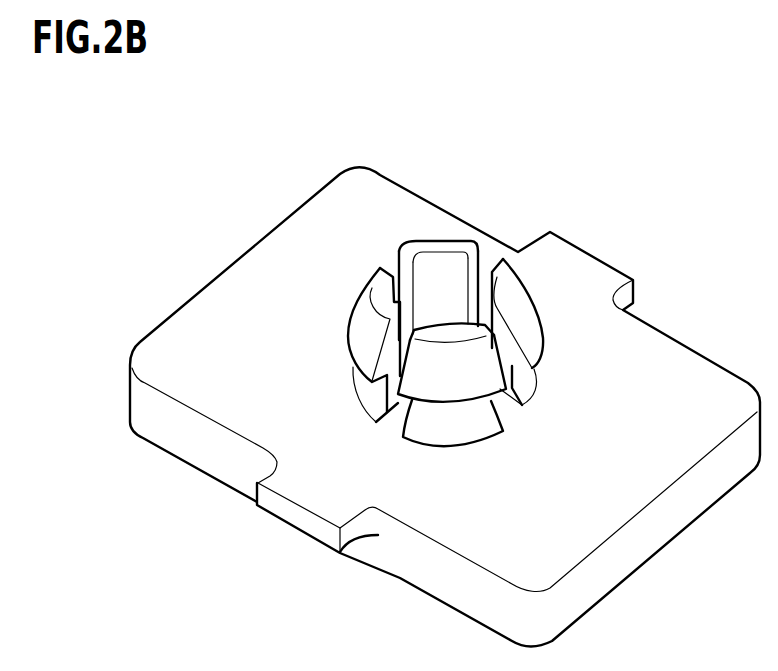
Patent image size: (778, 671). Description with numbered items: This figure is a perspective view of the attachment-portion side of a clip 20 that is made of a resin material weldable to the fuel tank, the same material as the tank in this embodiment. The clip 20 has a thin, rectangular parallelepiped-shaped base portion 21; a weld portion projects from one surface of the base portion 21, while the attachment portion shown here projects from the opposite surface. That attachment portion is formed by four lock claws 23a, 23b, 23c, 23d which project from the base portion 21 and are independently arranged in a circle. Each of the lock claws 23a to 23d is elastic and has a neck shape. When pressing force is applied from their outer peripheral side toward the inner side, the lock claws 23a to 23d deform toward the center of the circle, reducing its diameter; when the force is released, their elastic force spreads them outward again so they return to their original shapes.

The clip 20 is at (571, 194).
The base portion 21 is at (398, 182).
The lock claw 23a is at (437, 238).
The lock claw 23b is at (523, 312).
The lock claw 23c is at (454, 377).
The lock claw 23d is at (363, 327).